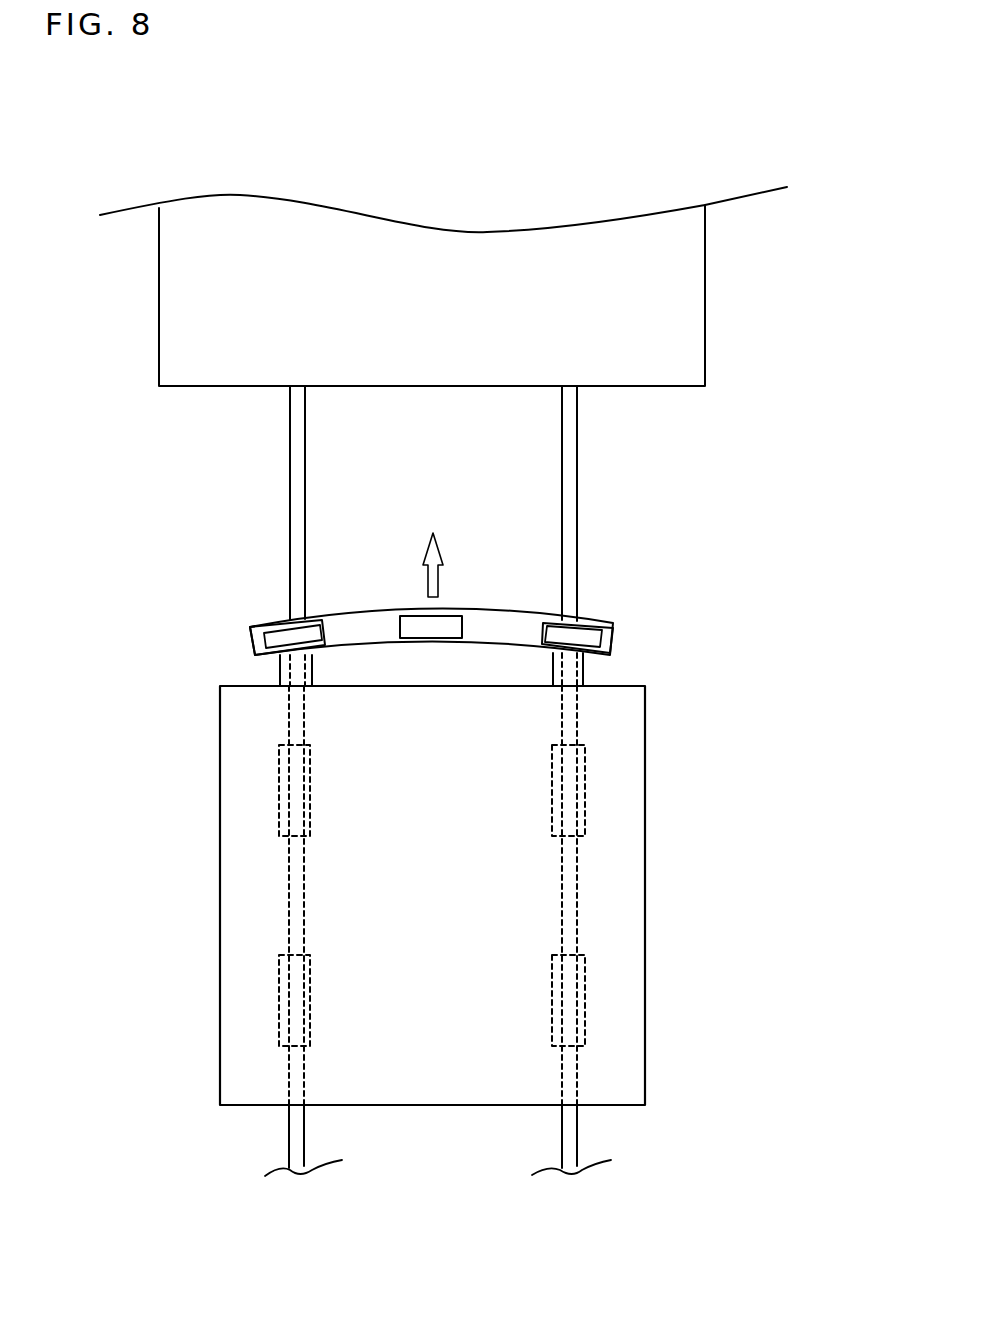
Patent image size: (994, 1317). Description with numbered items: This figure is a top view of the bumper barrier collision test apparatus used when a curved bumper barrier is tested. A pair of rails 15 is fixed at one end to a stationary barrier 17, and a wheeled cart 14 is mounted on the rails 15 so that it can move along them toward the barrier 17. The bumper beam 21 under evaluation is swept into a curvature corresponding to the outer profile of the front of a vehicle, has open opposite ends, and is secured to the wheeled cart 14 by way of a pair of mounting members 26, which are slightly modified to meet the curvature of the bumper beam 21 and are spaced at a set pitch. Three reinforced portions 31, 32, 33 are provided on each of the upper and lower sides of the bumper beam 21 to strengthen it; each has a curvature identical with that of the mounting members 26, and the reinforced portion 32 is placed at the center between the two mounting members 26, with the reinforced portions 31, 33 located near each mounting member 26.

The wheeled cart 14 is at (630, 735).
The rails 15 is at (295, 562).
The stationary barrier 17 is at (647, 283).
The bumper beam 21 is at (613, 630).
The mounting members 26 is at (283, 672).
The reinforced portion 31 is at (302, 633).
The reinforced portion 32 is at (445, 625).
The reinforced portion 33 is at (580, 633).